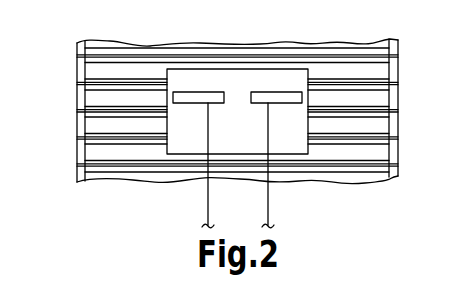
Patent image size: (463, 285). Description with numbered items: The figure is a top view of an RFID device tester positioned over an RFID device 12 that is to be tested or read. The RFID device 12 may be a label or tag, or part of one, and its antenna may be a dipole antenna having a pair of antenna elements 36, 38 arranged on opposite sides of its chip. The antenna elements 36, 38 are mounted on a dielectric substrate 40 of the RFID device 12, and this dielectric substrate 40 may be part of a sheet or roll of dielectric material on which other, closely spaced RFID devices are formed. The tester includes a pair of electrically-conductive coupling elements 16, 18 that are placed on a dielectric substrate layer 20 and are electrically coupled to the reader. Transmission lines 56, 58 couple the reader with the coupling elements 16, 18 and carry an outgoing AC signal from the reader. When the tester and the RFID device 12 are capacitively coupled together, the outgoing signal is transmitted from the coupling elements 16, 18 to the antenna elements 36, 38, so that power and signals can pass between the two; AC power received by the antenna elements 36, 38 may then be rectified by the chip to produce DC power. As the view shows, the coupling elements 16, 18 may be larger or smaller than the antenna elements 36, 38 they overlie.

The RFID device 12 is at (63, 99).
The coupling element 16 is at (192, 96).
The coupling element 18 is at (275, 96).
The dielectric substrate layer 20 is at (287, 142).
The antenna element 36 is at (88, 97).
The antenna element 38 is at (379, 97).
The dielectric substrate 40 is at (77, 107).
The transmission line 56 is at (208, 201).
The transmission line 58 is at (268, 203).